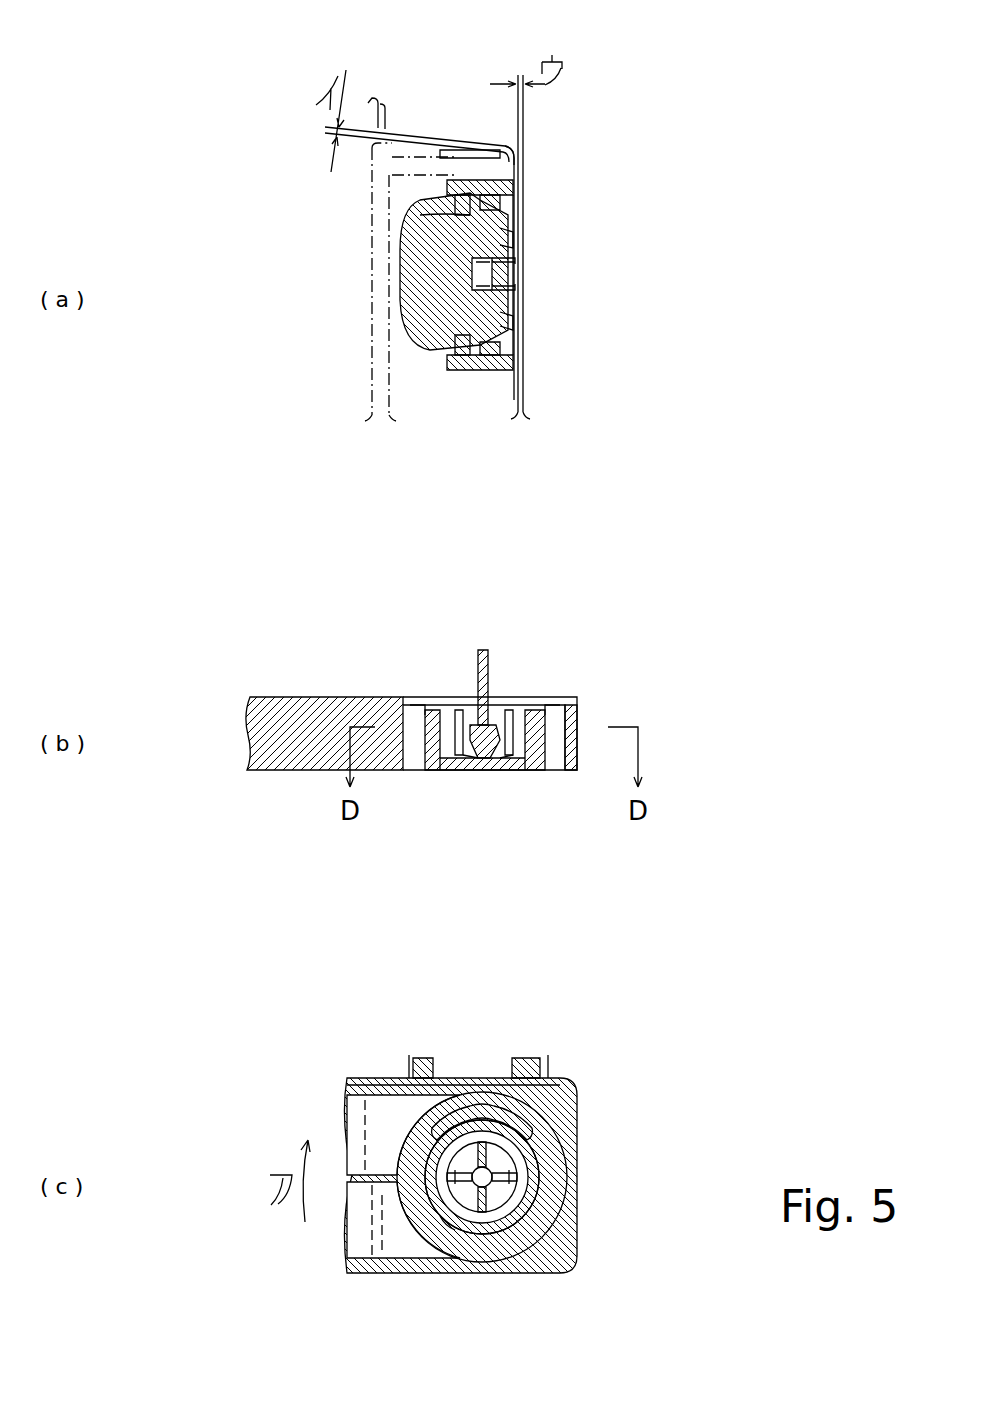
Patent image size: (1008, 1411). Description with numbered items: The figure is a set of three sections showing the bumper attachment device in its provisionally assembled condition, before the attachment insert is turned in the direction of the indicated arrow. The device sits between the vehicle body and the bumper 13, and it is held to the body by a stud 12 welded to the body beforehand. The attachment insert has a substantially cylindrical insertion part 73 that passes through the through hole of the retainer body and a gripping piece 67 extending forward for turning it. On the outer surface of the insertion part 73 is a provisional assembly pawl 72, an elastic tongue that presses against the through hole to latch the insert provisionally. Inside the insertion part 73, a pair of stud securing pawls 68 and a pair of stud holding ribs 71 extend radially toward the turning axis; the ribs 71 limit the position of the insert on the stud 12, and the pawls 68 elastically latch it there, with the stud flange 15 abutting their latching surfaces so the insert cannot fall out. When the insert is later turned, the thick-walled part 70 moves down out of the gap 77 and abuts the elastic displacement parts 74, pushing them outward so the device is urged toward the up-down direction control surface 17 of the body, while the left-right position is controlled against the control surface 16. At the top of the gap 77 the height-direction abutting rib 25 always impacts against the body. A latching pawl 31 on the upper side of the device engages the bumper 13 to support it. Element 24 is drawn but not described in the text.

The stud 12 is at (482, 760).
The bumper 13 is at (372, 300).
The stud flange 15 is at (515, 288).
The vehicle left-right direction control surface 16 is at (405, 127).
The vehicle up-down direction control surface 17 is at (525, 300).
The circular portion 24 is at (500, 1092).
The height-direction abutting rib 25 is at (495, 140).
The latching pawl 31 is at (456, 148).
The gripping piece 67 is at (400, 270).
The stud securing pawl 68 is at (496, 760).
The thick-walled part 70 is at (428, 762).
The stud holding rib 71 is at (505, 320).
The provisional assembly pawl 72 is at (415, 222).
The insertion part 73 is at (495, 372).
The elastic displacement part 74 is at (527, 1120).
The gap 77 is at (440, 1112).